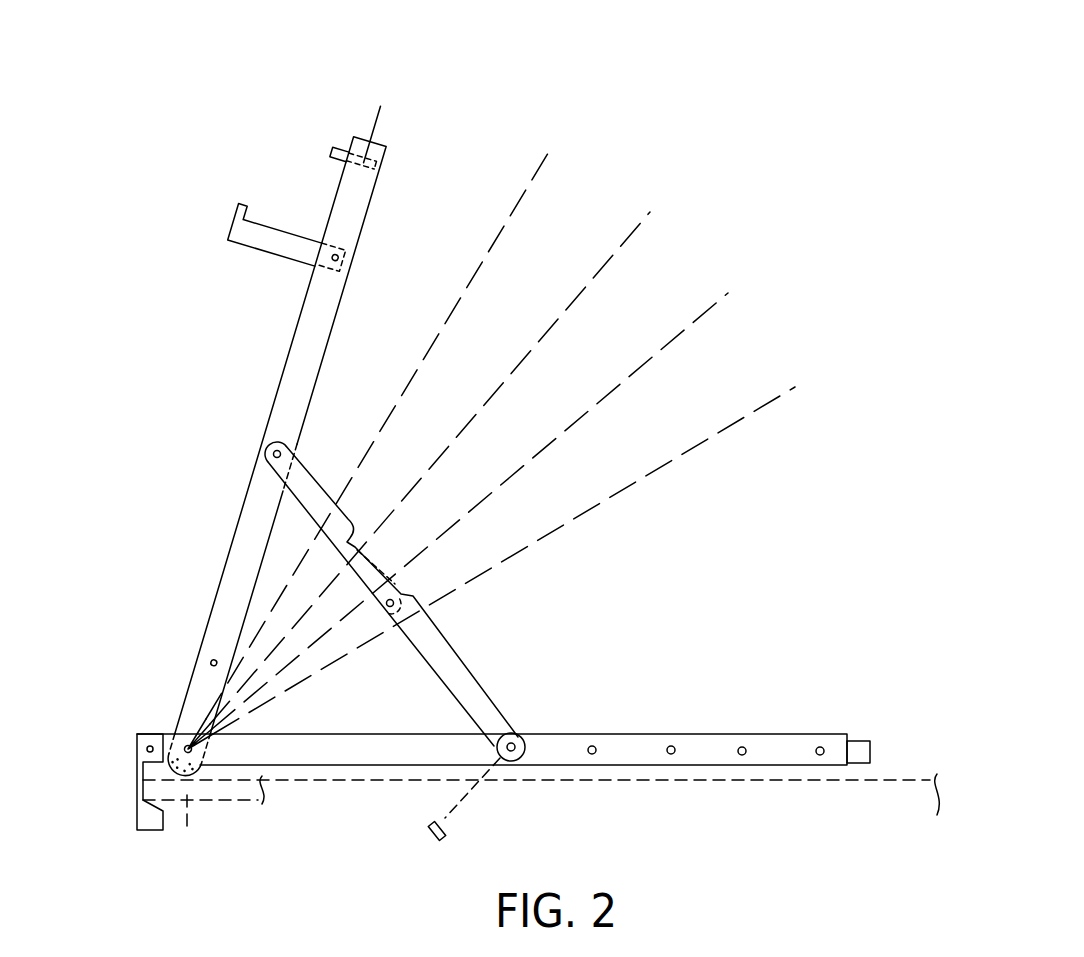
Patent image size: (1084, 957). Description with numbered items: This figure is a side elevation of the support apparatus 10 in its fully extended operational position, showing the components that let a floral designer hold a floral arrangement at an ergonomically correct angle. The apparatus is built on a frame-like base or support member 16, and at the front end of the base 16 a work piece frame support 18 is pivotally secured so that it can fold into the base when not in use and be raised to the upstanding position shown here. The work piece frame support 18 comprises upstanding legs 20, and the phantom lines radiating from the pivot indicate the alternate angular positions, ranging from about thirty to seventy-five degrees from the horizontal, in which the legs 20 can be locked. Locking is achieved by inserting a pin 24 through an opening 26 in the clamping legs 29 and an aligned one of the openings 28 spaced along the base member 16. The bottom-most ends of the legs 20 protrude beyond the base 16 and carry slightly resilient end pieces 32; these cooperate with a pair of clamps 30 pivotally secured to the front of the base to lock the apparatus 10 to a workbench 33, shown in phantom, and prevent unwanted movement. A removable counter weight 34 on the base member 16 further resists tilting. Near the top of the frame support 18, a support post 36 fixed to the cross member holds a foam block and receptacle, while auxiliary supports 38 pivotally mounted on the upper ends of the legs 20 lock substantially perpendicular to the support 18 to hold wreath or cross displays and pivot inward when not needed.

The support apparatus 10 is at (548, 592).
The base or support member 16 is at (697, 733).
The work piece frame support 18 is at (262, 382).
The upstanding legs 20 is at (303, 373).
The pin 24 is at (445, 829).
The opening 26 is at (518, 733).
The openings 28 is at (592, 746).
The clamping legs 29 is at (436, 585).
The clamps 30 is at (124, 766).
The end pieces 32 is at (209, 784).
The workbench 33 is at (406, 816).
The counter weight 34 is at (880, 745).
The support post 36 is at (336, 151).
The auxiliary supports 38 is at (269, 216).